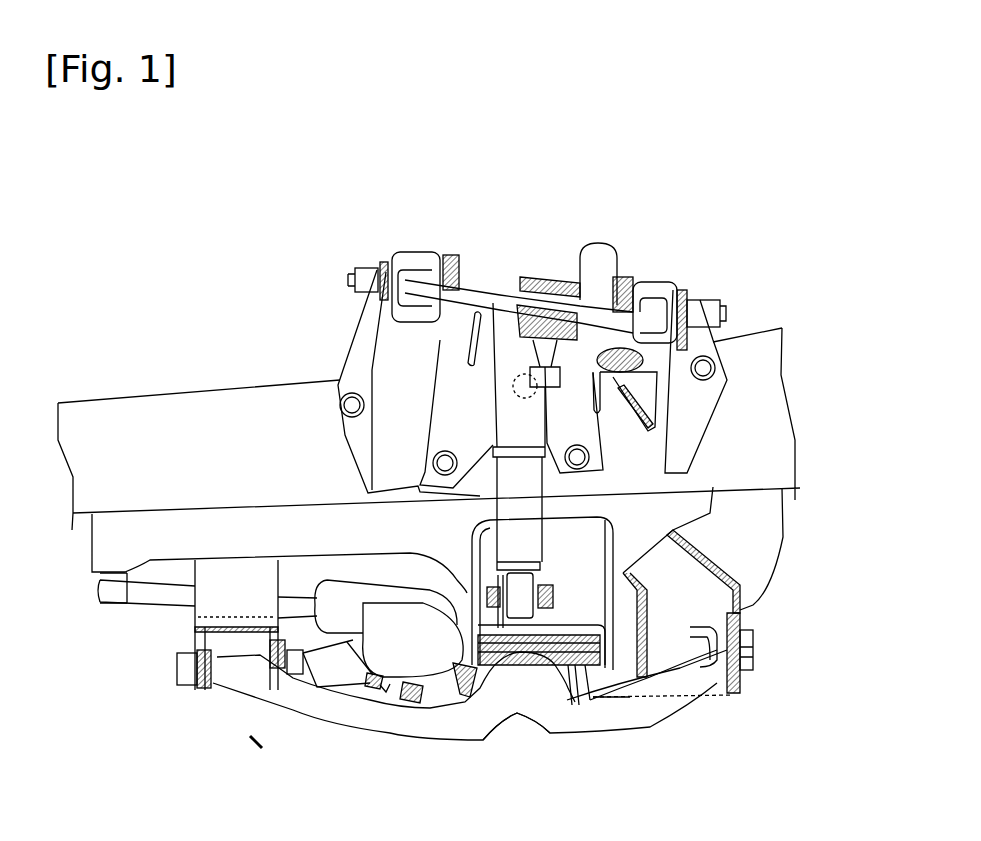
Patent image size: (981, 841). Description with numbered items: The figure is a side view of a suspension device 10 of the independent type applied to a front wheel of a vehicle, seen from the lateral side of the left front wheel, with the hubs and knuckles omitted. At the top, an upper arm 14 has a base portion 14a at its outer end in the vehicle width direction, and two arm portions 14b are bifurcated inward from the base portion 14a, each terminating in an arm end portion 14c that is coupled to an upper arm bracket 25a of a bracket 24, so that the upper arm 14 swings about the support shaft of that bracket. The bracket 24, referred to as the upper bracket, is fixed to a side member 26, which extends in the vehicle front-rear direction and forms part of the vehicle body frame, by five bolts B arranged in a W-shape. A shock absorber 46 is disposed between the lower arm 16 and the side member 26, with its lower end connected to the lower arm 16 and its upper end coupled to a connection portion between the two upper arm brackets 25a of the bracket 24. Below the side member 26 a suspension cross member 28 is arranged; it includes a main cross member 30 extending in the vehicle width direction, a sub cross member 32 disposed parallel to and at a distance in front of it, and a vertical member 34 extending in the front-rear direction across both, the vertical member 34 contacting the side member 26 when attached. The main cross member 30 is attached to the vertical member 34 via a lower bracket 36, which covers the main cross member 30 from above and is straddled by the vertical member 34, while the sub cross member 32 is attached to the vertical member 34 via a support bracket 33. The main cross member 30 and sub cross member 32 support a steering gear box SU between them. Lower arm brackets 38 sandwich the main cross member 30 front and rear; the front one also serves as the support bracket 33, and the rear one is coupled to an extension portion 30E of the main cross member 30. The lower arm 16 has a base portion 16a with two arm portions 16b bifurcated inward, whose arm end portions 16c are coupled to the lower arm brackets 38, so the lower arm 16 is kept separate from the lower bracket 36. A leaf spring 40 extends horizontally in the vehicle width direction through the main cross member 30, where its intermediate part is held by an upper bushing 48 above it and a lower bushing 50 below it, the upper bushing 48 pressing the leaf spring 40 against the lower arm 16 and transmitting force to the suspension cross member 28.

The suspension device 10 is at (624, 190).
The side member 26 is at (158, 402).
The bracket 24 is at (355, 337).
The bolts B is at (338, 416).
The upper arm bracket 25a is at (383, 262).
The arm end portion 14c is at (413, 250).
The arm portion 14b is at (457, 270).
The upper arm 14 is at (497, 270).
The base portion 14a is at (550, 290).
The shock absorber 46 is at (495, 506).
The support bracket 33 is at (235, 575).
The sub cross member 32 is at (190, 618).
The vertical member 34 is at (123, 557).
The upper bushing 48 is at (573, 632).
The bracket 36 is at (628, 607).
The lower arm bracket 38 is at (733, 688).
The lower arm 16 is at (460, 742).
The base portion 16a is at (545, 733).
The arm portion 16b is at (387, 727).
The arm end portion 16c is at (218, 705).
The suspension cross member 28 is at (257, 743).
The steering gear box SU is at (385, 690).
The lower bushing 50 is at (565, 740).
The leaf spring 40 is at (578, 740).
The main cross member 30 is at (595, 722).
The extension portion 30E is at (616, 700).